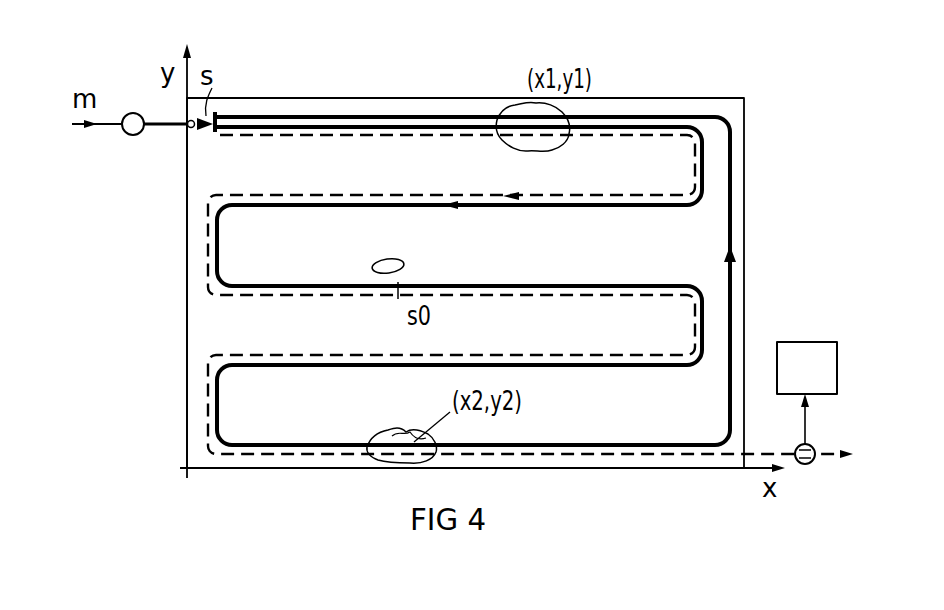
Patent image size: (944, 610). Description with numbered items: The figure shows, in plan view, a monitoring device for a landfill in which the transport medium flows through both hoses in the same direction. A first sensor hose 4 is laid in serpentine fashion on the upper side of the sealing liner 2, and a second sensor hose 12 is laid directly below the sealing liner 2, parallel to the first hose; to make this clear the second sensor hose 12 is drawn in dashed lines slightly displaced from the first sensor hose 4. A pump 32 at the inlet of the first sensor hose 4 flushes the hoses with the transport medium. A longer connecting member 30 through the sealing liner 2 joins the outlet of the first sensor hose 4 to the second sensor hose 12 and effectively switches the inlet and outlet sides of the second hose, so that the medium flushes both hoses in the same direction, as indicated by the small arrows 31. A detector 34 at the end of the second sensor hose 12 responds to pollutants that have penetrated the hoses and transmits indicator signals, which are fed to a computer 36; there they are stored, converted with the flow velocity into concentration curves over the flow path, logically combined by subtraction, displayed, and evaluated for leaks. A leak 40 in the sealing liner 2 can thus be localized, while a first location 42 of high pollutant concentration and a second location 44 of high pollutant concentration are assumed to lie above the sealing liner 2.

The sealing liner 2 is at (645, 100).
The first sensor hose 4 is at (292, 120).
The second sensor hose 12 is at (368, 130).
The connecting member 30 is at (732, 187).
The arrows 31 is at (509, 193).
The pump 32 is at (133, 113).
The detector 34 is at (809, 448).
The computer 36 is at (797, 350).
The leak 40 is at (392, 259).
The first location of high concentration of pollutants 42 is at (522, 112).
The second location of high concentration of pollutants 44 is at (395, 433).